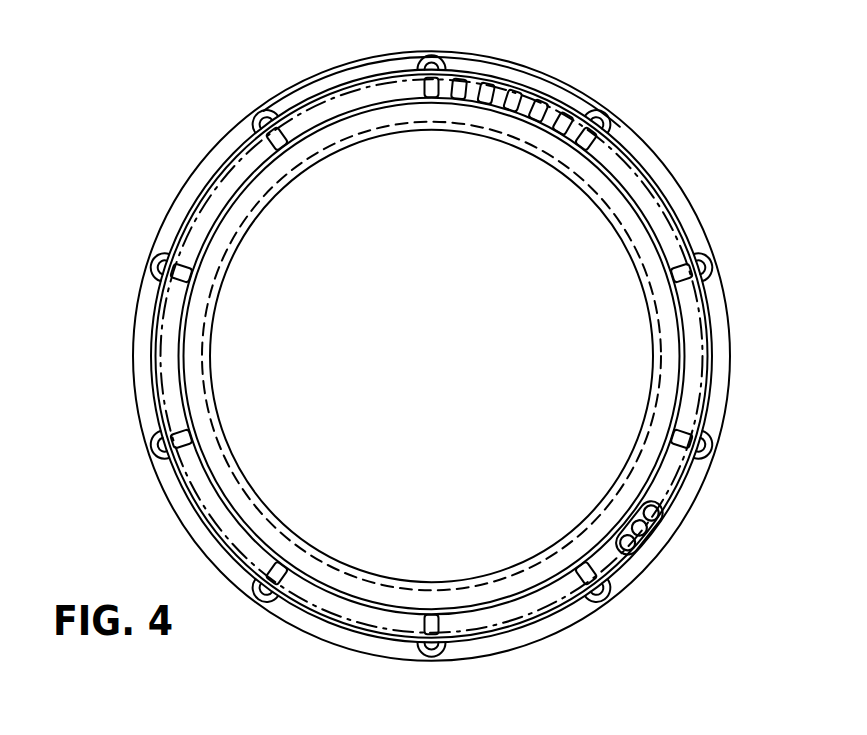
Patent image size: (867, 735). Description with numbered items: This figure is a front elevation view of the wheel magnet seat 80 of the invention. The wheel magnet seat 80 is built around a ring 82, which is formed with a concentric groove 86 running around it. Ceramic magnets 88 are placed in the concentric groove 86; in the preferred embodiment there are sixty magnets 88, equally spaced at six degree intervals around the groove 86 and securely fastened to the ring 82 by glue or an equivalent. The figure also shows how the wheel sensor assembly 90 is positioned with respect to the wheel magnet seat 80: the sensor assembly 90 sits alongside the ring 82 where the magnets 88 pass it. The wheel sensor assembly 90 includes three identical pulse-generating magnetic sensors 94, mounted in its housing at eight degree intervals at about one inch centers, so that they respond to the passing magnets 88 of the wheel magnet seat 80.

The wheel magnet seat 80 is at (210, 128).
The ring 82 is at (655, 152).
The concentric groove 86 is at (322, 97).
The ceramic magnets 88 is at (541, 106).
The wheel sensor assembly 90 is at (666, 542).
The pulse-generating magnetic sensors 94 is at (621, 538).